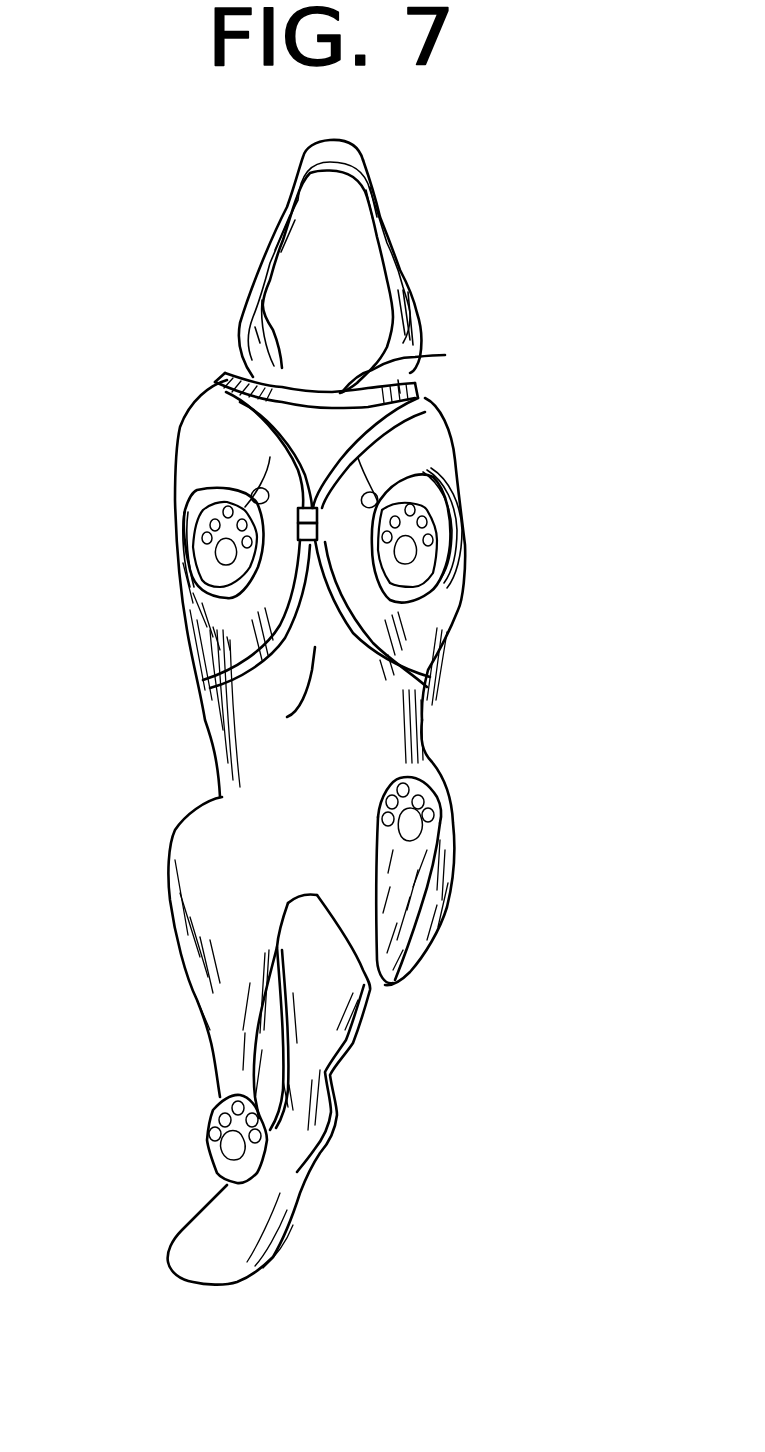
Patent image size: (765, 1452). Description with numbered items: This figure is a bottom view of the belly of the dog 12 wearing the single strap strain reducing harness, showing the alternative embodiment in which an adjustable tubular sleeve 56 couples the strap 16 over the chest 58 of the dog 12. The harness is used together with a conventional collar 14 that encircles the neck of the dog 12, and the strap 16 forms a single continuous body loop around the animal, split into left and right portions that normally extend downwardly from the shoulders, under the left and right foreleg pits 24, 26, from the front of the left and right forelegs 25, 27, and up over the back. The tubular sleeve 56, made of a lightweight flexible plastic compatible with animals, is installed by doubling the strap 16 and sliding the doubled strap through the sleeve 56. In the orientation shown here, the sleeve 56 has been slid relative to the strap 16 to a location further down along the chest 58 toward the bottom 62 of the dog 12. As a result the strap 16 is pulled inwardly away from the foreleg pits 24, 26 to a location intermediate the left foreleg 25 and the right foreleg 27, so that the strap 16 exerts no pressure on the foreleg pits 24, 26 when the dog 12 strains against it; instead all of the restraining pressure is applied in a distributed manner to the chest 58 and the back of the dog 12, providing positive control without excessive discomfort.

The dog 12 is at (497, 665).
The collar 14 is at (445, 355).
The strap 16 is at (377, 428).
The left foreleg pit 24 is at (447, 505).
The left foreleg 25 is at (447, 560).
The right foreleg pit 26 is at (237, 513).
The right foreleg 27 is at (183, 538).
The adjustable tubular sleeve 56 is at (257, 487).
The chest 58 is at (333, 507).
The bottom 62 is at (287, 717).